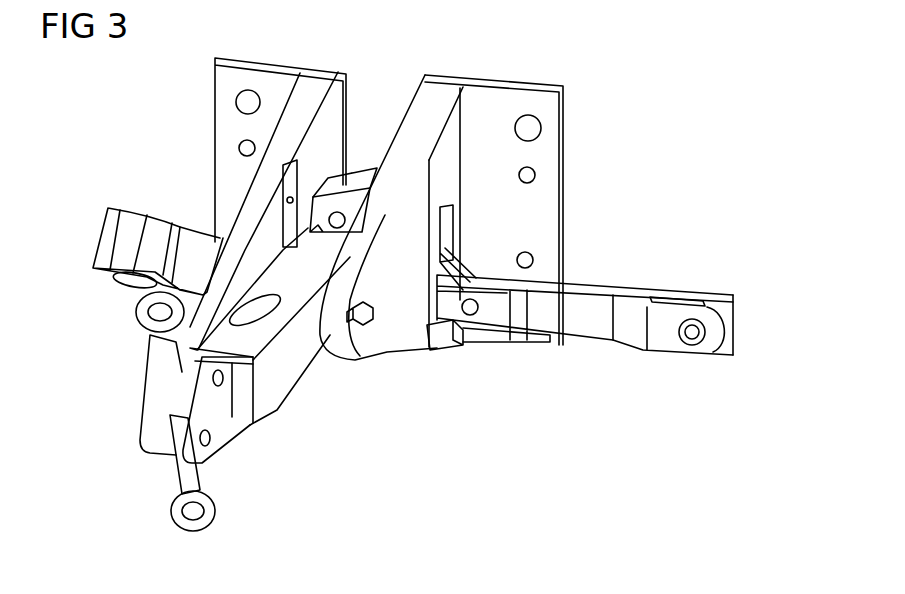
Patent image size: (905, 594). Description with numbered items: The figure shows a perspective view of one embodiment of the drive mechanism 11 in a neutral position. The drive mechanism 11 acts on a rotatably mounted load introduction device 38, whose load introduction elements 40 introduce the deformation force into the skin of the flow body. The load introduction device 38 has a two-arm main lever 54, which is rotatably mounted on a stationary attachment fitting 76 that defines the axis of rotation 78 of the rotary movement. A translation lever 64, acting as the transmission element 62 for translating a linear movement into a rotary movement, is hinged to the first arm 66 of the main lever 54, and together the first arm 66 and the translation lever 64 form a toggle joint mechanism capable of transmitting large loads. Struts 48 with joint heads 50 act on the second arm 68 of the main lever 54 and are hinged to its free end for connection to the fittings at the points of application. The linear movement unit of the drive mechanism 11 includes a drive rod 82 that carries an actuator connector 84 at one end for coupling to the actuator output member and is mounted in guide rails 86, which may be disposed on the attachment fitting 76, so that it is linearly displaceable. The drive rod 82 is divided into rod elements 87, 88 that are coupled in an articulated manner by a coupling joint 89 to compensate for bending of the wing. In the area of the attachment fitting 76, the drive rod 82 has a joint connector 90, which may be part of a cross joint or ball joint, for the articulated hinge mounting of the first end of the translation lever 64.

The drive mechanism 11 is at (544, 426).
The load introduction device 38 is at (278, 413).
The load introduction element 40 is at (297, 397).
The strut 48 is at (170, 365).
The joint head 50 is at (150, 315).
The main lever 54 is at (312, 370).
The transmission element 62 is at (370, 172).
The translation lever 64 is at (462, 270).
The first arm 66 is at (350, 183).
The second arm 68 is at (255, 435).
The attachment fitting 76 is at (222, 83).
The axis of rotation 78 is at (388, 330).
The drive rod 82 is at (632, 287).
The actuator connector 84 is at (105, 232).
The guide rail 86 is at (470, 340).
The rod element 87 is at (583, 298).
The rod element 88 is at (722, 295).
The coupling joint 89 is at (693, 350).
The joint connector 90 is at (480, 313).